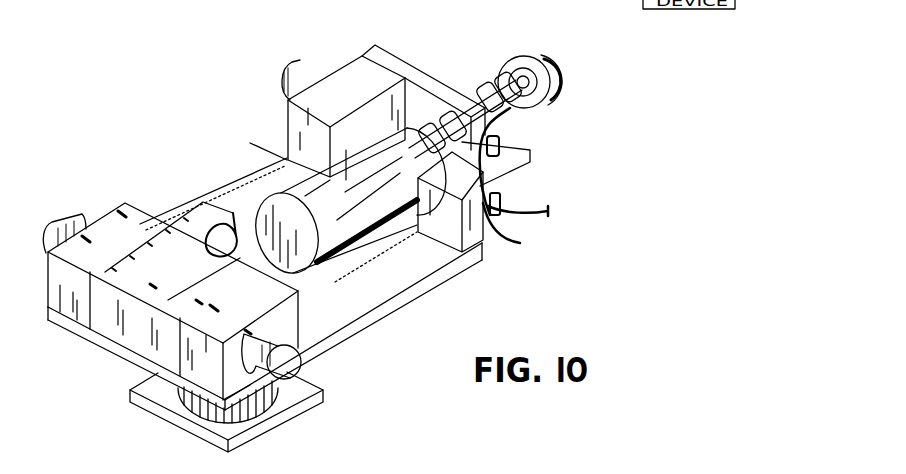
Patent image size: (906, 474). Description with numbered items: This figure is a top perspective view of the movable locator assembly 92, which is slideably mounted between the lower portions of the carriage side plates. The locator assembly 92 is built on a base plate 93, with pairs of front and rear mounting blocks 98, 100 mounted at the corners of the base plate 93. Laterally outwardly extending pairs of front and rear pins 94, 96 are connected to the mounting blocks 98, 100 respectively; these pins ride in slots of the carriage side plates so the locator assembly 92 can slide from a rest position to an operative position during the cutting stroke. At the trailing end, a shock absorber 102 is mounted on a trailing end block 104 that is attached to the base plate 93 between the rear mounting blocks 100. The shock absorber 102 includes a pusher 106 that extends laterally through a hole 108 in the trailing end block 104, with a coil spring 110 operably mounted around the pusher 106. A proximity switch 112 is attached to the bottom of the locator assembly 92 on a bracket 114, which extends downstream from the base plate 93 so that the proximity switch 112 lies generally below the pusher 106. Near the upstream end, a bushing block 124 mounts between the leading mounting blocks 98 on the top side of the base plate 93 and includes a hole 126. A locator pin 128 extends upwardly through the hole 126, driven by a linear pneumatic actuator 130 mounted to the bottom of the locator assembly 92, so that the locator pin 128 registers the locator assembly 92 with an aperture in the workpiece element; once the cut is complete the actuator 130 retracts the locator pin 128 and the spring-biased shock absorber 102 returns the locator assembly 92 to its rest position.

The locator assembly 92 is at (237, 95).
The base plate 93 is at (403, 308).
The front pins 94 is at (68, 217).
The rear pins 96 is at (294, 74).
The front mounting blocks 98 is at (57, 273).
The rear mounting blocks 100 is at (341, 72).
The shock absorber 102 is at (315, 188).
The trailing end block 104 is at (413, 73).
The pusher 106 is at (558, 68).
The hole 108 is at (444, 126).
The coil spring 110 is at (503, 110).
The proximity switch 112 is at (513, 197).
The bracket 114 is at (527, 173).
The bushing block 124 is at (107, 322).
The hole 126 is at (229, 222).
The locator pin 128 is at (200, 233).
The linear pneumatic actuator 130 is at (180, 397).